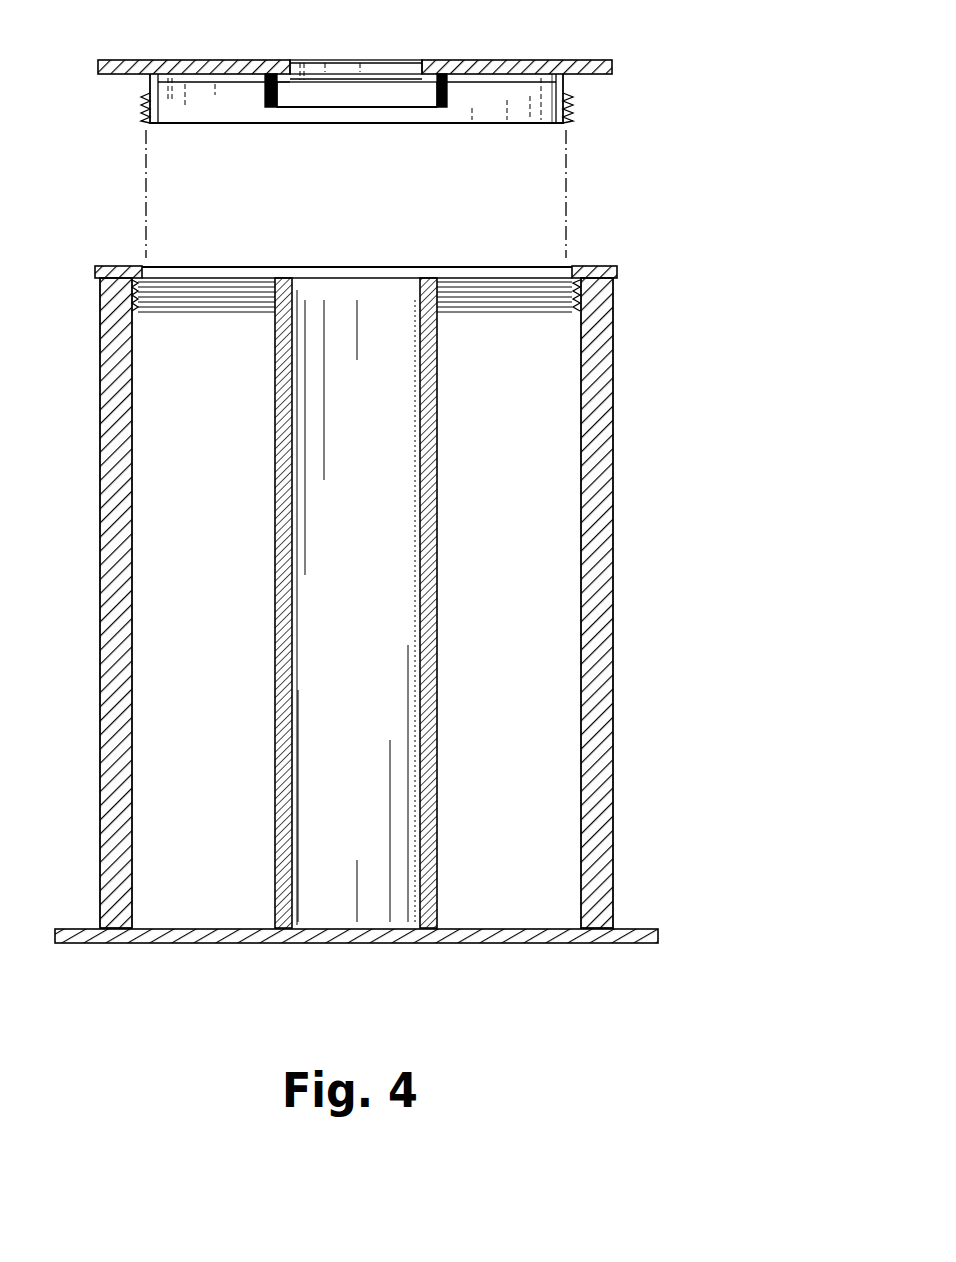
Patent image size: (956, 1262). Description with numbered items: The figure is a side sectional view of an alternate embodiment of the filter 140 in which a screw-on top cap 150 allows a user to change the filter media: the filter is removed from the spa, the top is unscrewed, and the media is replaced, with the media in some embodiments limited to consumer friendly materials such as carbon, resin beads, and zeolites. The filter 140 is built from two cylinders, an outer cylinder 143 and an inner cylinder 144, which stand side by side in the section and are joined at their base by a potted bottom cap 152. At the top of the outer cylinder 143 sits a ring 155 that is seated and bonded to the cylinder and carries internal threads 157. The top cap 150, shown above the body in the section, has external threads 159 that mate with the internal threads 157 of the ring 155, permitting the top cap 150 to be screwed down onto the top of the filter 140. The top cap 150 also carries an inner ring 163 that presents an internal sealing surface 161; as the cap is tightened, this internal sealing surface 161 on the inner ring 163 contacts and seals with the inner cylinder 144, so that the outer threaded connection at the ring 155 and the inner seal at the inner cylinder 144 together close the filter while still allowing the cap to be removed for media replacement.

The filter 140 is at (396, 601).
The outer cylinder 143 is at (613, 412).
The inner cylinder 144 is at (438, 483).
The top cap 150 is at (389, 97).
The potted bottom cap 152 is at (645, 943).
The ring 155 is at (590, 267).
The internal threads 157 is at (572, 290).
The external threads 159 is at (576, 108).
The internal sealing surface 161 is at (437, 100).
The inner ring 163 is at (285, 78).